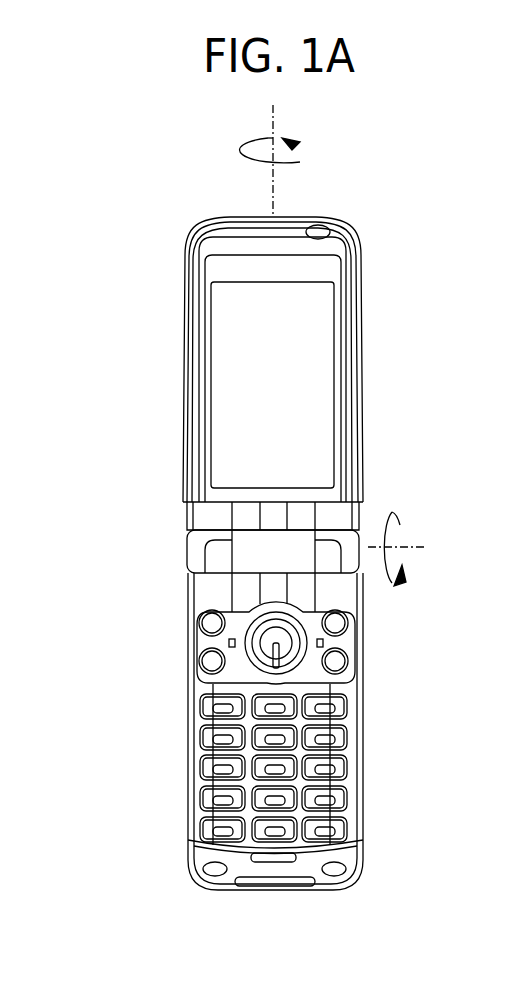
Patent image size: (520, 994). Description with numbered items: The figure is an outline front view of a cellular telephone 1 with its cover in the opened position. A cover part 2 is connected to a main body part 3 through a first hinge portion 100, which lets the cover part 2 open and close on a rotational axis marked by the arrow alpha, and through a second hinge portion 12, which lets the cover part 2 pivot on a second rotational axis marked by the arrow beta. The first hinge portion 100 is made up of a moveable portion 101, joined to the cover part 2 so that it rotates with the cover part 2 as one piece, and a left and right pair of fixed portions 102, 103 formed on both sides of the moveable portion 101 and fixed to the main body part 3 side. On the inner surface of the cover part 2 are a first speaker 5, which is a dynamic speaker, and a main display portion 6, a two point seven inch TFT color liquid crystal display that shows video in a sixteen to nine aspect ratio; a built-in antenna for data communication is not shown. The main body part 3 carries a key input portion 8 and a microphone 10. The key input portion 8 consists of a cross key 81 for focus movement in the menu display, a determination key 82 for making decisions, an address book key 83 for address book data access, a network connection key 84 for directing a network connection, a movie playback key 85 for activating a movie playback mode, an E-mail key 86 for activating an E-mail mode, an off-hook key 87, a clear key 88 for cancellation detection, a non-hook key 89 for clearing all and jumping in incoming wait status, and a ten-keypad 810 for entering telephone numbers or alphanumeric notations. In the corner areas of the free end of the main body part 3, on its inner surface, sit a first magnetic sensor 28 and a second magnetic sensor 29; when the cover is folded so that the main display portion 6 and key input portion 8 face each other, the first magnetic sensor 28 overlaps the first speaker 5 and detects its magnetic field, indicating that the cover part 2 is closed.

The cellular telephone 1 is at (418, 220).
The cover part 2 is at (363, 330).
The main body part 3 is at (363, 793).
The first speaker 5 is at (330, 228).
The main display portion 6 is at (222, 330).
The key input portion 8 is at (98, 690).
The microphone 10 is at (277, 862).
The second hinge portion 12 is at (283, 517).
The first magnetic sensor 28 is at (355, 872).
The second magnetic sensor 29 is at (197, 870).
The cross key 81 is at (252, 608).
The determination key 82 is at (270, 640).
The address book key 83 is at (345, 623).
The network connection key 84 is at (345, 661).
The movie playback key 85 is at (205, 623).
The E-mail key 86 is at (205, 661).
The off-hook key 87 is at (205, 708).
The clear key 88 is at (300, 692).
The non-hook key 89 is at (340, 708).
The first hinge portion 100 is at (183, 546).
The moveable portion 101 is at (200, 515).
The fixed portion 102 is at (228, 537).
The fixed portion 103 is at (347, 537).
The ten-keypad 810 is at (182, 722).